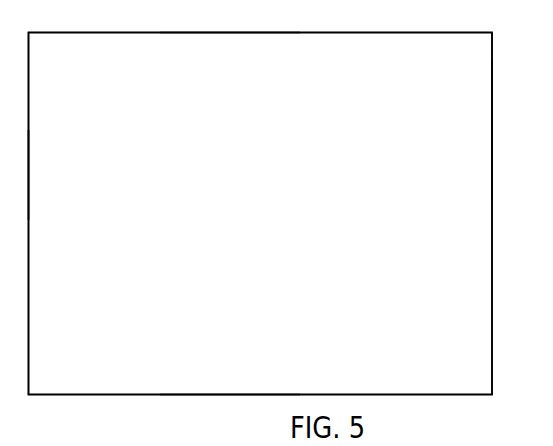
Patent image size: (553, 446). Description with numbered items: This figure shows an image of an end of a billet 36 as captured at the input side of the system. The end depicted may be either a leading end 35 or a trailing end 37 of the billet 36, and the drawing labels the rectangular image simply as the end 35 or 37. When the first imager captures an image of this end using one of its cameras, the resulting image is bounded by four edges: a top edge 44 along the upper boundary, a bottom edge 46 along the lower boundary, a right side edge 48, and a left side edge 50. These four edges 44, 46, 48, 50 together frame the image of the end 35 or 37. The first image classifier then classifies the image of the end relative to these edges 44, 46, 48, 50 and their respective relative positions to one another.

The leading end 35 is at (261, 214).
The trailing end 37 is at (261, 214).
The billet 36 is at (492, 103).
The top edge 44 is at (229, 33).
The bottom edge 46 is at (242, 394).
The right side edge 48 is at (492, 155).
The left side edge 50 is at (29, 168).